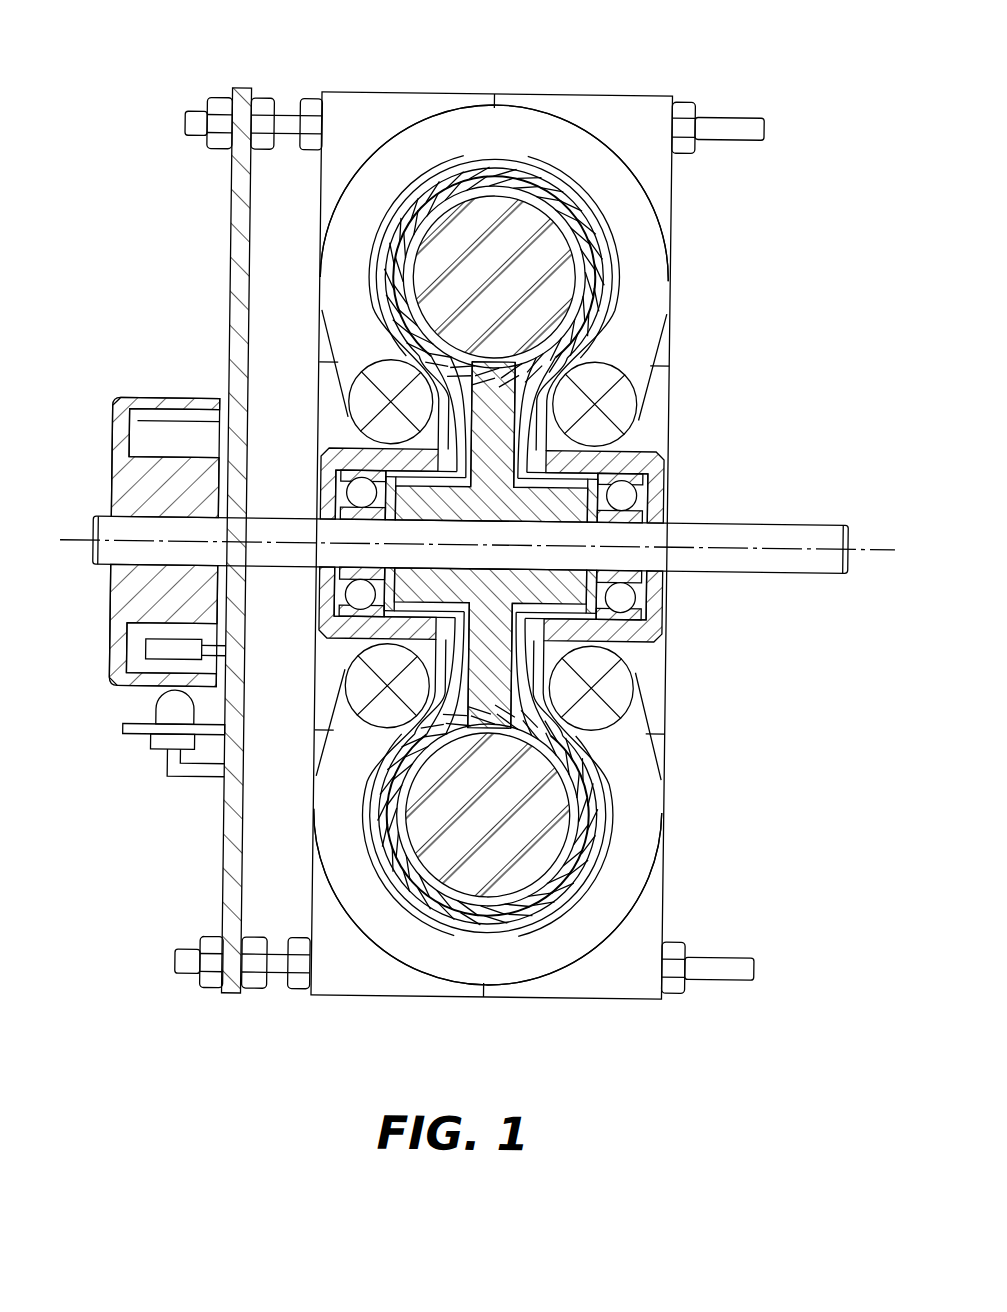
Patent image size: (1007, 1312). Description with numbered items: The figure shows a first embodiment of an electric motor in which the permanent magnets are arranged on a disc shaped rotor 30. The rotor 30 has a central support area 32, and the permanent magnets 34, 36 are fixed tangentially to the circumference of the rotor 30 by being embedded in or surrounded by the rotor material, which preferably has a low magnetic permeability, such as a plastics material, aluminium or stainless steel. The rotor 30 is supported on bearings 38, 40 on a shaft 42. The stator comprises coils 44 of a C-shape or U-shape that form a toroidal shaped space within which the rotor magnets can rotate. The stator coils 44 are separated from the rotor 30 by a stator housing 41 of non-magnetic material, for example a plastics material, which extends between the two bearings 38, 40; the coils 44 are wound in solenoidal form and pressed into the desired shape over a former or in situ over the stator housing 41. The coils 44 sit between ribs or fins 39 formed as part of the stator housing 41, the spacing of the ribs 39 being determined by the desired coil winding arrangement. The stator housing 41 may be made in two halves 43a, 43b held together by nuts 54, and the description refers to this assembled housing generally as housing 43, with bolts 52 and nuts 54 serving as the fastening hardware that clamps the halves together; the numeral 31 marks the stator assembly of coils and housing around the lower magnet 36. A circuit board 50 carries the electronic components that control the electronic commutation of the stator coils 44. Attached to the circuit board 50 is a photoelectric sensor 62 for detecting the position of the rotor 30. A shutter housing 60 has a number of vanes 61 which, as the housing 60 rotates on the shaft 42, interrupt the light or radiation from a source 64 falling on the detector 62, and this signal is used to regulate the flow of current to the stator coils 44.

The rotor 30 is at (500, 486).
The stator assembly 31 is at (494, 895).
The central support area 32 is at (499, 425).
The permanent magnet 34 is at (550, 256).
The permanent magnet 36 is at (533, 830).
The bearing 38 is at (339, 467).
The ribs or fins 39 is at (650, 173).
The bearing 40 is at (626, 597).
The stator housing 41 is at (651, 628).
The shaft 42 is at (795, 526).
The housing 43 is at (357, 1007).
The housing half 43a is at (591, 102).
The housing half 43b is at (385, 104).
The stator coils 44 is at (342, 264).
The circuit board 50 is at (238, 833).
The bolt 52 is at (215, 100).
The nuts 54 is at (304, 100).
The shutter housing 60 is at (130, 546).
The vanes 61 is at (118, 402).
The photoelectric sensor 62 is at (161, 654).
The source 64 is at (167, 705).